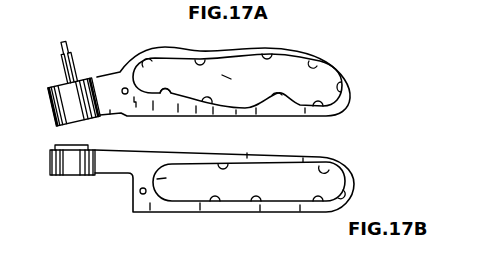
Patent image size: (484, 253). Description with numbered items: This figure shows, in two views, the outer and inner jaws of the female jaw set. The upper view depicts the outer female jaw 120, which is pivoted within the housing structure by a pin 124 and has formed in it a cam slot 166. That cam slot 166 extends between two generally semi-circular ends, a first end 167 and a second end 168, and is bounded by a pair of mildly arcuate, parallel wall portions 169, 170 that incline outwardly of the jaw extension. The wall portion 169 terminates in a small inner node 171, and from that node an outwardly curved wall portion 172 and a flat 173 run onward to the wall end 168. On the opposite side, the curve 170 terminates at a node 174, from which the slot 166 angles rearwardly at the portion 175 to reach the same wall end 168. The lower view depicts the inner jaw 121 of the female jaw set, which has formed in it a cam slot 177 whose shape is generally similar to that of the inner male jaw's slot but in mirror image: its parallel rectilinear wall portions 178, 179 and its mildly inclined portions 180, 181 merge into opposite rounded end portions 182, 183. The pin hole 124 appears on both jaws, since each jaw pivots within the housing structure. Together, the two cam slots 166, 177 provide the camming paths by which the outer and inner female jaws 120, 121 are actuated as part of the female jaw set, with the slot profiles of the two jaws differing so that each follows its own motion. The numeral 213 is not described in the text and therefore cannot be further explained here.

In FIG. 17A, the outer female jaw 120 is at (100, 73).
In FIG. 17B, the inner female jaw 121 is at (118, 176).
In FIG. 17A, the pin 124 is at (129, 89).
In FIG. 17B, the pin 124 is at (141, 197).
In FIG. 17A, the cam slot 166 is at (208, 96).
In FIG. 17A, the semi-circular end 167 is at (150, 63).
In FIG. 17A, the semi-circular end 168 is at (344, 89).
In FIG. 17A, the arcuate wall portion 169 is at (201, 66).
In FIG. 17A, the arcuate wall portion 170 is at (170, 93).
In FIG. 17A, the inner node 171 is at (244, 78).
In FIG. 17A, the outwardly curved wall portion 172 is at (268, 57).
In FIG. 17A, the flat 173 is at (328, 66).
In FIG. 17A, the node 174 is at (310, 92).
In FIG. 17A, the rearwardly angled slot portion 175 is at (318, 107).
In FIG. 17B, the cam slot 177 is at (258, 201).
In FIG. 17B, the rectilinear wall portion 178 is at (224, 165).
In FIG. 17B, the rectilinear wall portion 179 is at (217, 198).
In FIG. 17B, the inclined wall portion 180 is at (329, 168).
In FIG. 17B, the inclined wall portion 181 is at (319, 201).
In FIG. 17B, the rounded end portion 182 is at (157, 179).
In FIG. 17B, the rounded end portion 183 is at (343, 196).
In FIG. 17B, the sheet marking 213 is at (52, 240).